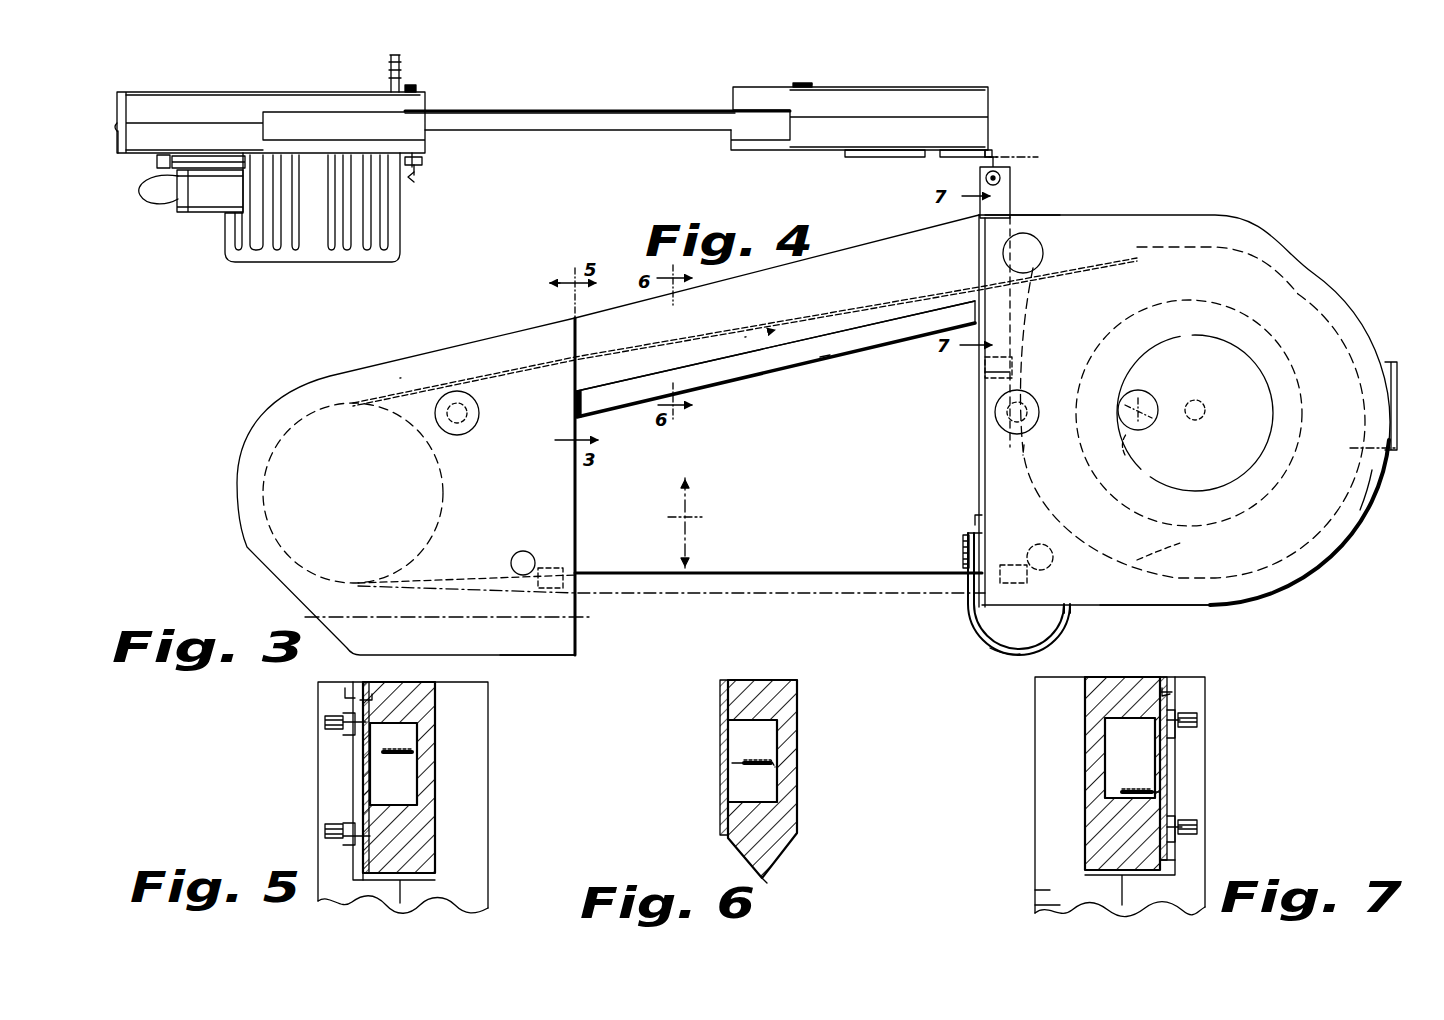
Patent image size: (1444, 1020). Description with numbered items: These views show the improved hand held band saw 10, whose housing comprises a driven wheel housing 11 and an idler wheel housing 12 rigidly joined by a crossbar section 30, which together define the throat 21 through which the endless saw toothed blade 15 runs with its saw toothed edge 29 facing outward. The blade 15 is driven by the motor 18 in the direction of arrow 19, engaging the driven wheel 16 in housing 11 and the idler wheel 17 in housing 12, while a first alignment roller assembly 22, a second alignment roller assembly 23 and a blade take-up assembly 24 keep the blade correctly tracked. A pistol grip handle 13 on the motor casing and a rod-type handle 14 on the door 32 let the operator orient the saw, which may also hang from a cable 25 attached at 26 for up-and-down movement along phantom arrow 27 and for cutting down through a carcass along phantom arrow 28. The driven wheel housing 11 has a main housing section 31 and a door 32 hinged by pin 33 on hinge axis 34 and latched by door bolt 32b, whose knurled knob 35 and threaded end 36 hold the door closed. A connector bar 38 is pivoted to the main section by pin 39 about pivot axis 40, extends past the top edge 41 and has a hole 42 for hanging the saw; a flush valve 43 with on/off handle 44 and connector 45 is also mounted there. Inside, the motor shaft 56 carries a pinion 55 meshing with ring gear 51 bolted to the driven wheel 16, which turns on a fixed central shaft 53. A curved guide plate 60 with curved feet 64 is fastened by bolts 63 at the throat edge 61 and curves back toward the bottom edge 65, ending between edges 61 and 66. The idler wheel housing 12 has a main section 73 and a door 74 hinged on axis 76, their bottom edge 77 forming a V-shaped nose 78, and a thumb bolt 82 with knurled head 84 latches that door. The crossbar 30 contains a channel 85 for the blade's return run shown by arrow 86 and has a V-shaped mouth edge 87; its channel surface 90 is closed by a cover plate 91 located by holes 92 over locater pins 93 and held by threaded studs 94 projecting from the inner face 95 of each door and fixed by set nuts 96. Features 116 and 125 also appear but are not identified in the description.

In FIG. 4, the hand held band saw 10 is at (1008, 67).
In FIG. 3, the hand held band saw 10 is at (209, 527).
In FIG. 4, the driven wheel housing 11 is at (179, 93).
In FIG. 3, the driven wheel housing 11 is at (1356, 226).
In FIG. 7, the driven wheel housing 11 is at (1032, 856).
In FIG. 4, the idler wheel housing 12 is at (930, 90).
In FIG. 3, the idler wheel housing 12 is at (427, 316).
In FIG. 5, the idler wheel housing 12 is at (490, 836).
In FIG. 4, the pistol grip handle 13 is at (177, 200).
In FIG. 4, the rod-type handle 14 is at (388, 70).
In FIG. 3, the rod-type handle 14 is at (1040, 245).
In FIG. 3, the endless saw toothed blade 15 is at (862, 302).
In FIG. 5, the endless saw toothed blade 15 is at (400, 756).
In FIG. 6, the endless saw toothed blade 15 is at (762, 760).
In FIG. 7, the endless saw toothed blade 15 is at (1113, 792).
In FIG. 3, the driven wheel 16 is at (1167, 554).
In FIG. 3, the idler wheel 17 is at (444, 519).
In FIG. 4, the motor 18 is at (402, 197).
In FIG. 3, the motor 18 is at (1188, 300).
In FIG. 3, the arrow 19 is at (830, 558).
In FIG. 3, the throat 21 is at (806, 449).
In FIG. 3, the first alignment roller assembly 22 is at (1038, 546).
In FIG. 3, the second alignment roller assembly 23 is at (555, 549).
In FIG. 4, the blade take-up assembly 24 is at (868, 158).
In FIG. 4, the cable 25 is at (1022, 155).
In FIG. 4, the attachment point 26 is at (1000, 178).
In FIG. 3, the phantom arrow 27 is at (682, 522).
In FIG. 3, the phantom arrow 28 is at (705, 517).
In FIG. 3, the saw toothed edge 29 is at (772, 594).
In FIG. 5, the saw toothed edge 29 is at (415, 752).
In FIG. 6, the saw toothed edge 29 is at (775, 770).
In FIG. 7, the saw toothed edge 29 is at (1124, 788).
In FIG. 4, the crossbar section 30 is at (598, 128).
In FIG. 3, the crossbar section 30 is at (780, 298).
In FIG. 5, the crossbar section 30 is at (438, 700).
In FIG. 6, the crossbar section 30 is at (780, 705).
In FIG. 7, the crossbar section 30 is at (1080, 703).
In FIG. 4, the main housing section 31 is at (194, 139).
In FIG. 7, the main housing section 31 is at (1042, 896).
In FIG. 4, the door 32 is at (273, 102).
In FIG. 3, the door 32 is at (1192, 412).
In FIG. 7, the door 32 is at (1183, 883).
In FIG. 4, the door bolt 32b is at (420, 86).
In FIG. 3, the door bolt 32b is at (1040, 410).
In FIG. 4, the pin 33 is at (118, 132).
In FIG. 3, the pin 33 is at (1382, 364).
In FIG. 3, the hinge axis 34 is at (1360, 448).
In FIG. 3, the knurled knob 35 is at (1035, 403).
In FIG. 3, the threaded end 36 is at (1011, 459).
In FIG. 4, the connector bar 38 is at (428, 165).
In FIG. 3, the connector bar 38 is at (1014, 310).
In FIG. 4, the pin 39 is at (425, 158).
In FIG. 3, the pin 39 is at (988, 378).
In FIG. 4, the pivot axis 40 is at (424, 180).
In FIG. 4, the top edge 41 is at (387, 120).
In FIG. 3, the top edge 41 is at (1043, 215).
In FIG. 7, the top edge 41 is at (1092, 674).
In FIG. 4, the hole 42 is at (1012, 198).
In FIG. 4, the flush valve 43 is at (166, 155).
In FIG. 4, the on/off handle 44 is at (212, 156).
In FIG. 4, the connector 45 is at (155, 188).
In FIG. 3, the ring gear 51 is at (1135, 465).
In FIG. 3, the fixed central shaft 53 is at (1215, 385).
In FIG. 3, the pinion 55 is at (1150, 400).
In FIG. 3, the motor shaft 56 is at (1150, 436).
In FIG. 3, the curved guide plate 60 is at (970, 632).
In FIG. 3, the throat edge 61 is at (973, 513).
In FIG. 7, the throat edge 61 is at (1062, 908).
In FIG. 3, the bolts 63 is at (961, 548).
In FIG. 3, the curved feet 64 is at (1014, 653).
In FIG. 3, the bottom edge 65 is at (1090, 608).
In FIG. 3, the end edge 66 is at (1366, 504).
In FIG. 4, the main section 73 is at (887, 135).
In FIG. 5, the main section 73 is at (479, 883).
In FIG. 4, the door 74 is at (887, 100).
In FIG. 3, the door 74 is at (487, 405).
In FIG. 5, the door 74 is at (301, 902).
In FIG. 3, the hinge axis 76 is at (460, 619).
In FIG. 3, the bottom edge 77 is at (518, 648).
In FIG. 3, the V-shaped nose 78 is at (578, 637).
In FIG. 4, the thumb bolt 82 is at (808, 82).
In FIG. 3, the thumb bolt 82 is at (481, 405).
In FIG. 4, the knurled head 84 is at (794, 86).
In FIG. 3, the knurled head 84 is at (480, 420).
In FIG. 5, the channel 85 is at (398, 793).
In FIG. 6, the channel 85 is at (774, 787).
In FIG. 7, the channel 85 is at (1110, 728).
In FIG. 3, the arrow 86 is at (762, 337).
In FIG. 3, the mouth edge 87 is at (823, 357).
In FIG. 6, the mouth edge 87 is at (772, 882).
In FIG. 5, the surface 90 is at (372, 870).
In FIG. 6, the surface 90 is at (744, 688).
In FIG. 7, the surface 90 is at (1178, 852).
In FIG. 4, the cover plate 91 is at (586, 108).
In FIG. 3, the cover plate 91 is at (776, 344).
In FIG. 5, the cover plate 91 is at (363, 775).
In FIG. 6, the cover plate 91 is at (724, 747).
In FIG. 7, the cover plate 91 is at (1170, 743).
In FIG. 5, the hole 92 is at (350, 682).
In FIG. 7, the hole 92 is at (1172, 680).
In FIG. 5, the locater pin 93 is at (385, 694).
In FIG. 7, the locater pin 93 is at (1178, 692).
In FIG. 5, the threaded studs 94 is at (365, 815).
In FIG. 7, the threaded studs 94 is at (1168, 803).
In FIG. 5, the inner face 95 is at (355, 758).
In FIG. 7, the inner face 95 is at (1178, 746).
In FIG. 5, the set nuts 96 is at (328, 734).
In FIG. 7, the set nuts 96 is at (1188, 718).
In FIG. 4, the housing rib 116 is at (994, 151).
In FIG. 3, the blade back edge 125 is at (748, 572).
In FIG. 6, the blade back edge 125 is at (743, 764).
In FIG. 7, the blade back edge 125 is at (1168, 791).